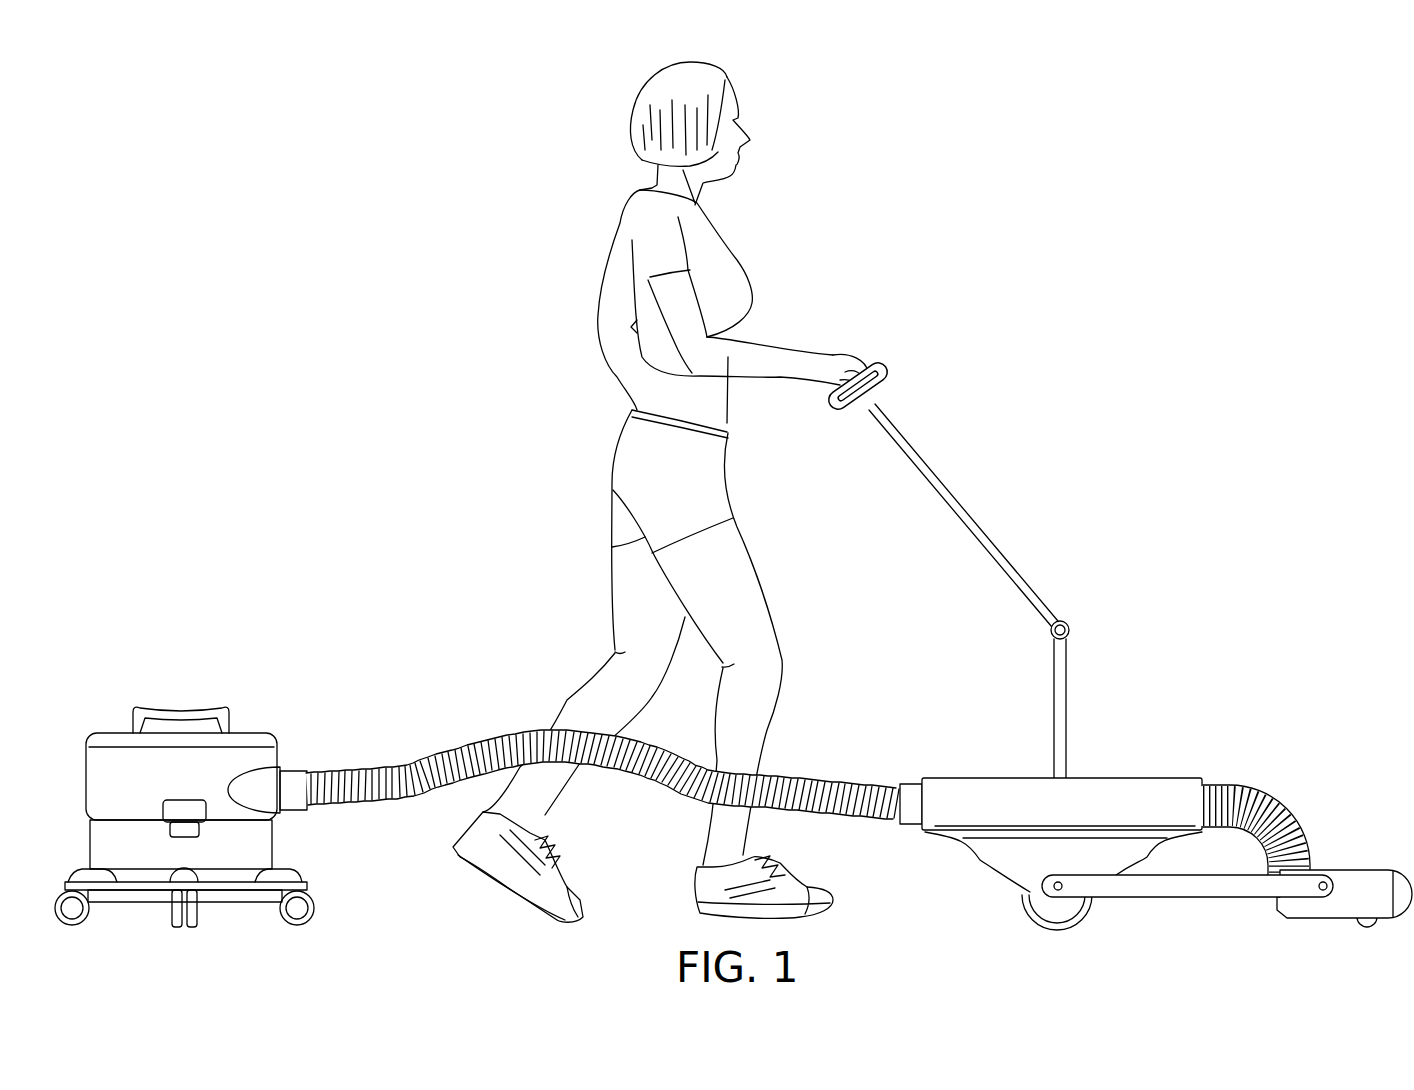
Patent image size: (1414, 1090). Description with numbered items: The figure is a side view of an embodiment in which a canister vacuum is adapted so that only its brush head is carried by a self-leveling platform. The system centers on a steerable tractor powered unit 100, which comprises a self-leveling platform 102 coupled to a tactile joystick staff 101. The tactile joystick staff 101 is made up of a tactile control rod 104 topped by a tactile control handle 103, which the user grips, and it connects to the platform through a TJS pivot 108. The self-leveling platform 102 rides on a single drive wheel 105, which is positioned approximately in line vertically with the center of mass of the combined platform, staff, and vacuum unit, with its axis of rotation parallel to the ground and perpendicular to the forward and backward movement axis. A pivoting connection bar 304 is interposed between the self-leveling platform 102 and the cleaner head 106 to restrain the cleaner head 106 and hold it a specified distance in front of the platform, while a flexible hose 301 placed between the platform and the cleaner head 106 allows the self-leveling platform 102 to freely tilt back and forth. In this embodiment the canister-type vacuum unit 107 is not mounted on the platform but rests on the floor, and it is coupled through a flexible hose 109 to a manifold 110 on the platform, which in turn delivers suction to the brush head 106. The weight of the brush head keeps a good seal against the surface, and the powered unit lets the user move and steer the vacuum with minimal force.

The steerable tractor powered unit 100 is at (1103, 337).
The tactile joystick staff 101 is at (1012, 464).
The self-leveling platform 102 is at (962, 868).
The tactile control handle 103 is at (885, 378).
The tactile control rod 104 is at (990, 540).
The drive wheel 105 is at (1065, 927).
The cleaner head 106 is at (1362, 870).
The canister-type vacuum unit 107 is at (107, 733).
The TJS pivot 108 is at (1072, 628).
The flexible hose 109 is at (416, 755).
The manifold 110 is at (1167, 778).
The flexible hose 301 is at (1258, 800).
The pivoting connection bar 304 is at (1193, 897).